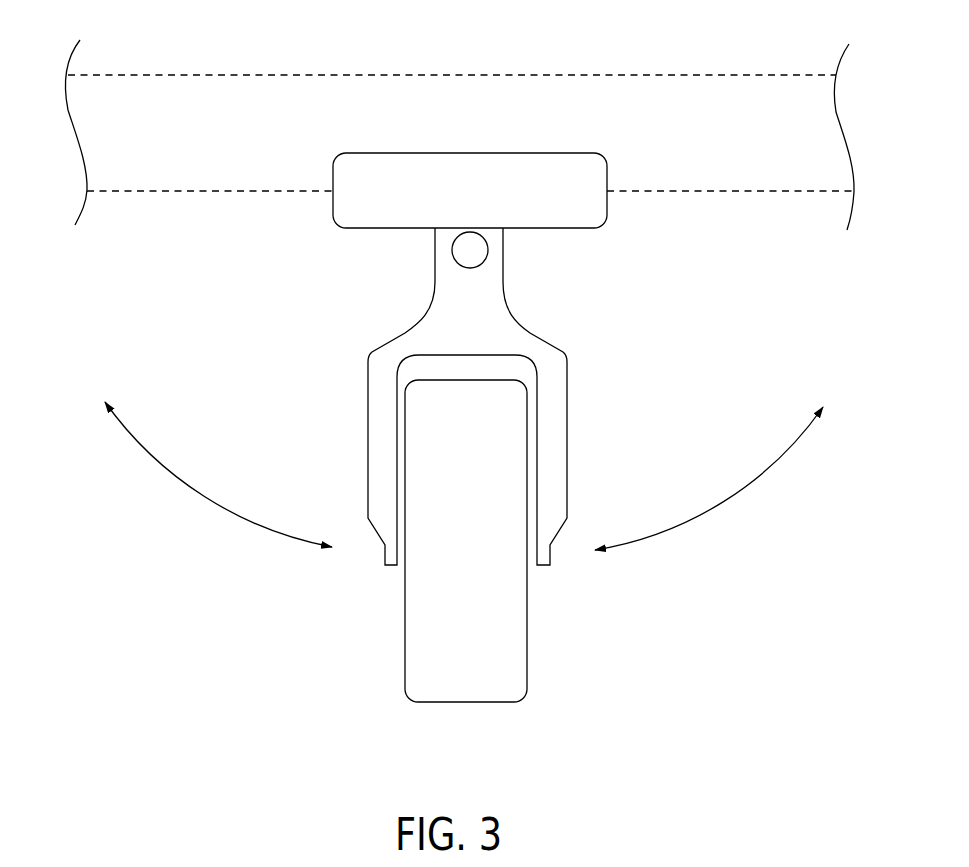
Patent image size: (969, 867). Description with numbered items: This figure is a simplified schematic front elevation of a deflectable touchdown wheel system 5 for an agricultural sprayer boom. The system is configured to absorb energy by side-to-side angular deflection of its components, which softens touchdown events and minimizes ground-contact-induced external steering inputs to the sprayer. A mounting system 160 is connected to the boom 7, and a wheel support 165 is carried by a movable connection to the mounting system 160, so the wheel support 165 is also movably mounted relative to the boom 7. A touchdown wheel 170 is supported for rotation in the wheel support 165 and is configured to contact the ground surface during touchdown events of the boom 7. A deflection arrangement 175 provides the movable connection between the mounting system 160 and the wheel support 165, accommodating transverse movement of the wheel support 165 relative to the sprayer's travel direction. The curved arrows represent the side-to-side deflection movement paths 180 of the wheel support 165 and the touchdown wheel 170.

The deflectable touchdown wheel system 5 is at (271, 660).
The boom 7 is at (571, 96).
The mounting system 160 is at (618, 206).
The wheel support 165 is at (388, 331).
The touchdown wheel 170 is at (529, 668).
The deflection arrangement 175 is at (516, 238).
The side-to-side deflection movement paths 180 is at (205, 497).